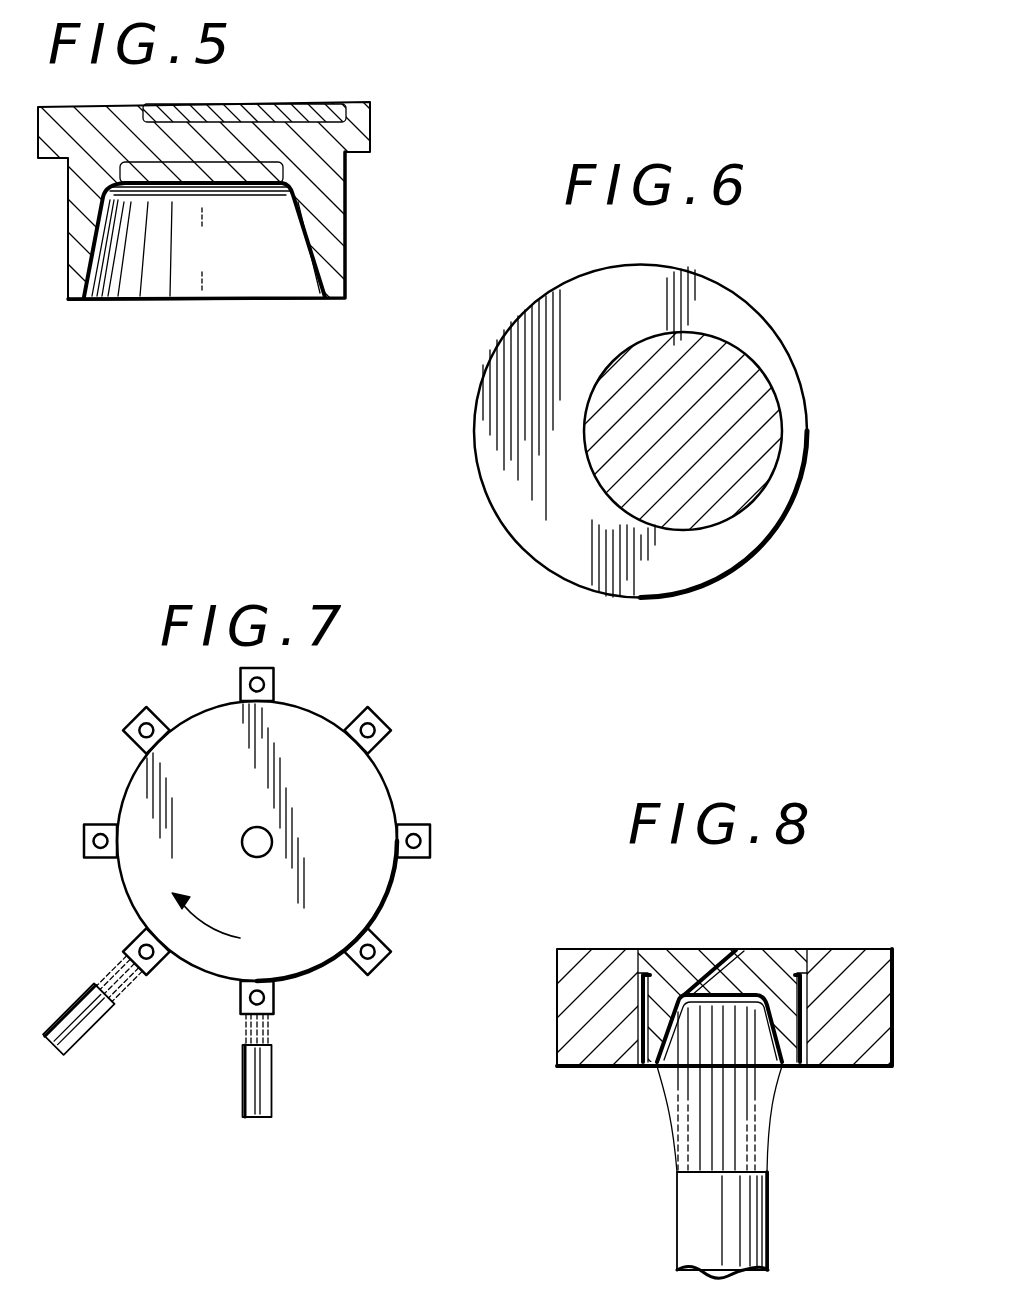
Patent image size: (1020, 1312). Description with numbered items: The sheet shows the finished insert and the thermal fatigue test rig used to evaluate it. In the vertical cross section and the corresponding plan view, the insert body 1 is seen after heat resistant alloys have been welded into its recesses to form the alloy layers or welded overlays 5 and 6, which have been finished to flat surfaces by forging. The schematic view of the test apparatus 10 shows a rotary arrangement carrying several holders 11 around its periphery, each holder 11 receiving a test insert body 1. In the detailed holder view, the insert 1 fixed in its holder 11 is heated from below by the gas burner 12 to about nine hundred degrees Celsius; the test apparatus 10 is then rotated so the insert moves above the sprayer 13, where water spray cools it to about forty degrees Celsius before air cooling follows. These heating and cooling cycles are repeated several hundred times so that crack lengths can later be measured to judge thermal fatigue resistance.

In FIG. 5, the insert body 1 is at (372, 117).
In FIG. 6, the insert body 1 is at (785, 346).
In FIG. 8, the insert body 1 is at (692, 957).
In FIG. 5, the alloy layer 5 is at (267, 104).
In FIG. 6, the alloy layer 5 is at (712, 342).
In FIG. 5, the alloy layer 6 is at (213, 176).
In FIG. 7, the test apparatus 10 is at (397, 884).
In FIG. 7, the holder 11 is at (275, 994).
In FIG. 8, the holder 11 is at (595, 957).
In FIG. 7, the gas burner 12 is at (268, 1082).
In FIG. 8, the gas burner 12 is at (675, 1218).
In FIG. 7, the sprayer 13 is at (98, 1030).